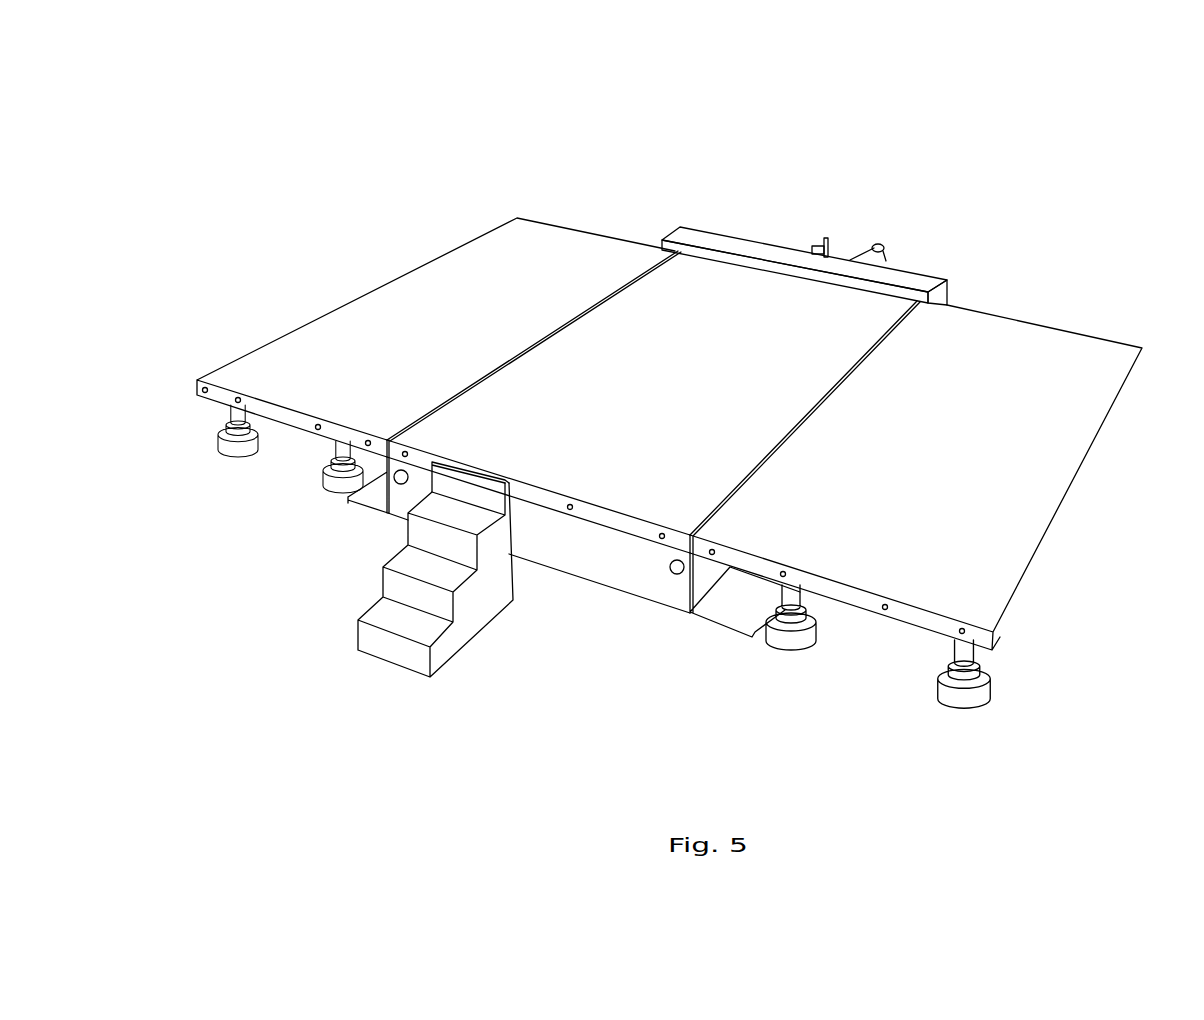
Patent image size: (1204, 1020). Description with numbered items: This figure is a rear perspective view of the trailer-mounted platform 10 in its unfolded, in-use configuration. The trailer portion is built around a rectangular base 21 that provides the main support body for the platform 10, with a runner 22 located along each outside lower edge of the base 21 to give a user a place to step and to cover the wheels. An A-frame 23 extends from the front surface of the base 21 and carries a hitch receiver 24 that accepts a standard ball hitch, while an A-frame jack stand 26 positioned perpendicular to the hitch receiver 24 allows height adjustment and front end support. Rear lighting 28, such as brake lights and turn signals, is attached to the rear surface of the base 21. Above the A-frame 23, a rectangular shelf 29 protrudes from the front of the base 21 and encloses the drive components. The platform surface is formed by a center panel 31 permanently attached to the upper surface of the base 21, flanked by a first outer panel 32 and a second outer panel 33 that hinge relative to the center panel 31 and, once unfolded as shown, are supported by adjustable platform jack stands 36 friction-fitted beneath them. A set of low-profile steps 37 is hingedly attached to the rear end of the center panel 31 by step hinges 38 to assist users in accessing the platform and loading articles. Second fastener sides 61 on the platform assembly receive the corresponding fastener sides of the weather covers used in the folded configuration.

The trailer-mounted platform 10 is at (262, 134).
The base 21 is at (535, 527).
The runner 22 is at (378, 493).
The A-frame 23 is at (885, 268).
The hitch receiver 24 is at (881, 246).
The A-frame jack stand 26 is at (823, 240).
The rear lighting 28 is at (399, 483).
The shelf 29 is at (708, 243).
The center panel 31 is at (658, 295).
The first outer panel 32 is at (1052, 338).
The second outer panel 33 is at (552, 232).
The platform jack stand 36 is at (228, 450).
The steps 37 is at (398, 620).
The step hinge 38 is at (483, 473).
The second fastener side 61 is at (367, 441).